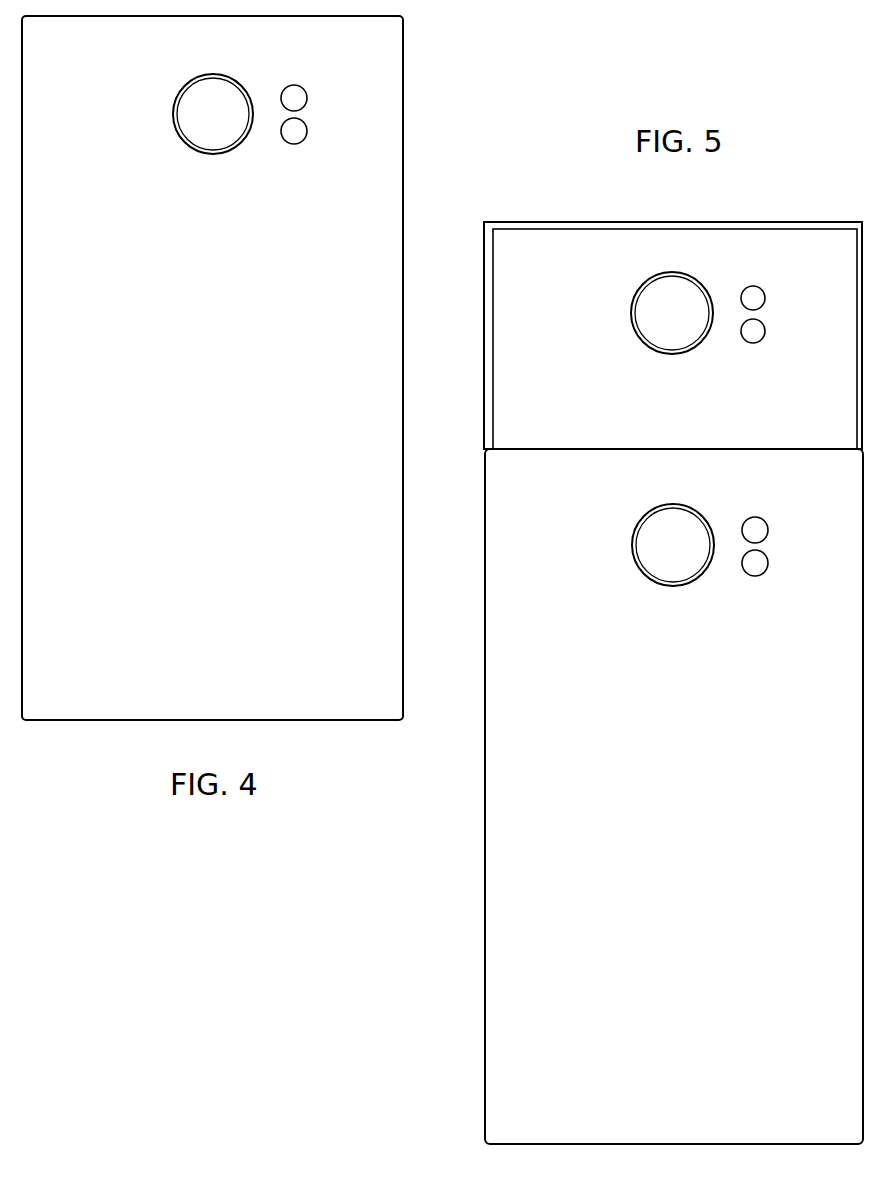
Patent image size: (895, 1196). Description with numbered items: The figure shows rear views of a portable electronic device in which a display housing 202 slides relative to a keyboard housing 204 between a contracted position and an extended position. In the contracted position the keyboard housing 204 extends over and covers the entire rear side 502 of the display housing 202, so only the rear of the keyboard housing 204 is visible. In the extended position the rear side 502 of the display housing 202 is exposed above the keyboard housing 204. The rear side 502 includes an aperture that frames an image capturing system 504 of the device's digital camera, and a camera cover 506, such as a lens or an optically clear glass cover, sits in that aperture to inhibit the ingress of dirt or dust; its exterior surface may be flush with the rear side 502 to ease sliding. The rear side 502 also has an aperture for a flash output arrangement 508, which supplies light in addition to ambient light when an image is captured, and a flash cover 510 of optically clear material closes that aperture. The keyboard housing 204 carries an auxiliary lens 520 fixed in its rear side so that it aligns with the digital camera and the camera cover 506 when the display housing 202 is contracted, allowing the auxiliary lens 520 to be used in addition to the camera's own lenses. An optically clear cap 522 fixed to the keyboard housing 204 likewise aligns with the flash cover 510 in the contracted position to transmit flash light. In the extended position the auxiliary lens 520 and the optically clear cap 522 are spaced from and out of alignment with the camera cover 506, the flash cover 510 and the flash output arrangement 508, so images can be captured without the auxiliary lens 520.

In FIG. 5, the display housing 202 is at (548, 222).
In FIG. 4, the keyboard housing 204 is at (396, 137).
In FIG. 5, the keyboard housing 204 is at (484, 1090).
In FIG. 5, the rear side of the display housing 502 is at (506, 340).
In FIG. 5, the image capturing system 504 is at (670, 315).
In FIG. 5, the camera cover 506 is at (692, 277).
In FIG. 5, the flash output arrangement 508 is at (750, 287).
In FIG. 5, the flash cover 510 is at (765, 295).
In FIG. 4, the auxiliary lens 520 is at (245, 143).
In FIG. 5, the auxiliary lens 520 is at (655, 562).
In FIG. 4, the optically clear cap 522 is at (308, 97).
In FIG. 5, the optically clear cap 522 is at (742, 524).